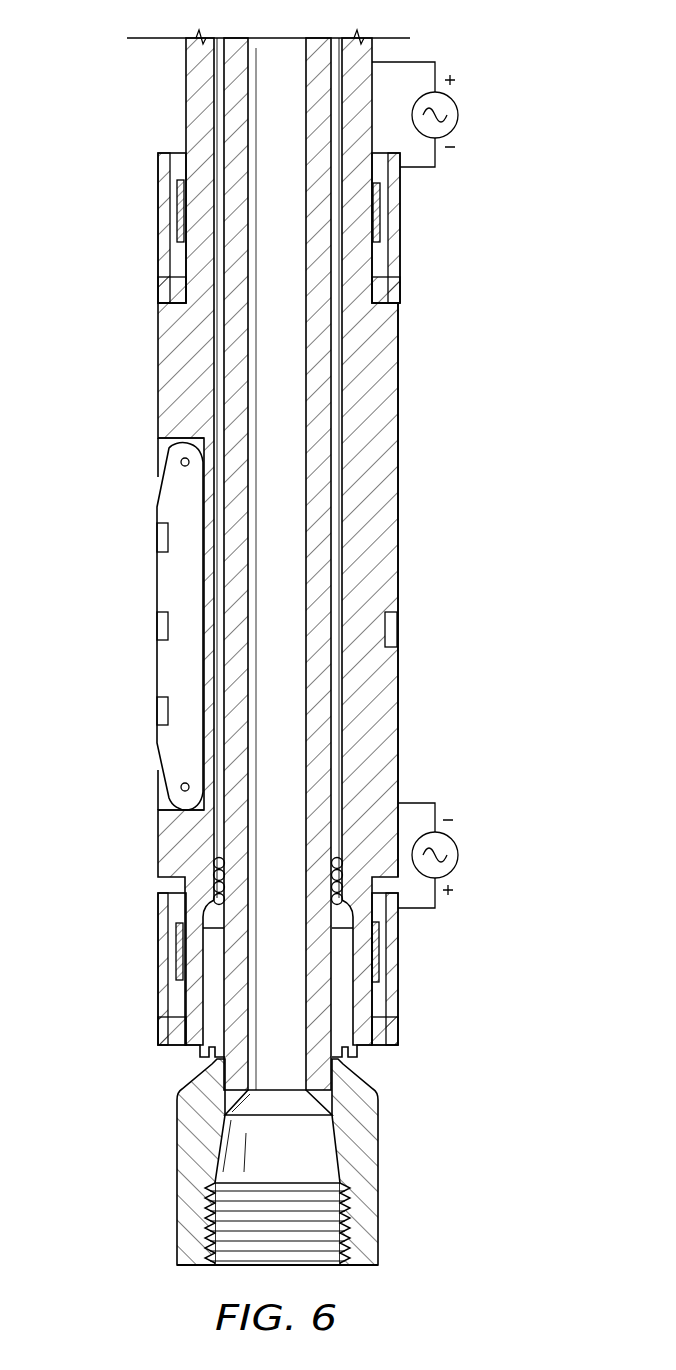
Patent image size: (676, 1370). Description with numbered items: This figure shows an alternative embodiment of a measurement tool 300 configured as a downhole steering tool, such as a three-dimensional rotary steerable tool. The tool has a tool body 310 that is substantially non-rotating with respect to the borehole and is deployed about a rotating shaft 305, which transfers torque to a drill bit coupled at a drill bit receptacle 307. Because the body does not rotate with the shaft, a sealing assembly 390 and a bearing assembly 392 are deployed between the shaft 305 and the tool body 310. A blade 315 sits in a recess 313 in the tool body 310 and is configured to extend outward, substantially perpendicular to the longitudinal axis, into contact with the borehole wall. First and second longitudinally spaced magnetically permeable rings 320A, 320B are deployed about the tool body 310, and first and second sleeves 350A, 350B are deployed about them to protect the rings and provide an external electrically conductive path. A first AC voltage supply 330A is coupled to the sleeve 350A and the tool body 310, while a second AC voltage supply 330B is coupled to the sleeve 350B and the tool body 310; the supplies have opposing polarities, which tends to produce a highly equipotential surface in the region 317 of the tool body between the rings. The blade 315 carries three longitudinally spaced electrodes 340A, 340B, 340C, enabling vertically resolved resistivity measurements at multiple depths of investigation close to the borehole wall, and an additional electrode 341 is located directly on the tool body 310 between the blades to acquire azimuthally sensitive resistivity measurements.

The measurement tool 300 is at (456, 405).
The rotating shaft 305 is at (237, 753).
The drill bit receptacle 307 is at (177, 1195).
The tool body 310 is at (158, 366).
The recess 313 is at (166, 447).
The blade 315 is at (167, 498).
The region of the tool body 317 is at (399, 480).
The first magnetically permeable ring 320A is at (379, 228).
The second magnetically permeable ring 320B is at (380, 968).
The first AC voltage supply 330A is at (458, 112).
The second AC voltage supply 330B is at (458, 855).
The electrode 340A is at (157, 539).
The electrode 340B is at (157, 627).
The electrode 340C is at (157, 712).
The additional electrode 341 is at (398, 627).
The first sleeve 350A is at (158, 238).
The second sleeve 350B is at (158, 954).
The sealing assembly 390 is at (183, 1060).
The bearing assembly 392 is at (214, 866).